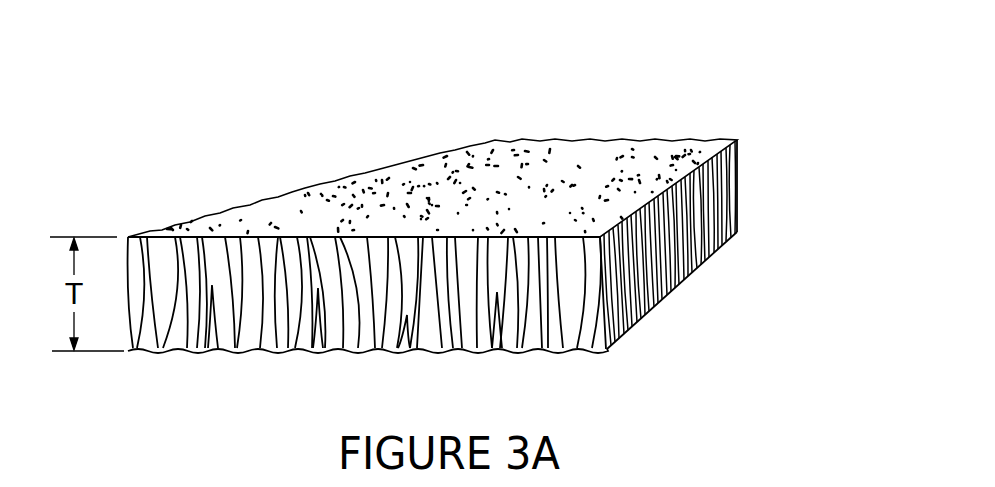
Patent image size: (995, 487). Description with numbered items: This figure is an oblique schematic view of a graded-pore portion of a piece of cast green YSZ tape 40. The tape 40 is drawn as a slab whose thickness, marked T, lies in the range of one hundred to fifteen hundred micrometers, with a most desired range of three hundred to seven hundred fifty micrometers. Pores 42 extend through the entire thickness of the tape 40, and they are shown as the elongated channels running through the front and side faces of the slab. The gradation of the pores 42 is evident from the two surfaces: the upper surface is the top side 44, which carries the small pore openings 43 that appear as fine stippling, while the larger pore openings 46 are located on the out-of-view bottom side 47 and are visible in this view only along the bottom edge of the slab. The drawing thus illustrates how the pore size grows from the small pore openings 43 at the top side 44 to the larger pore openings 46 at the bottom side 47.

The green YSZ tape 40 is at (440, 247).
The pores 42 is at (533, 280).
The small pore openings 43 is at (308, 235).
The top side 44 is at (448, 157).
The larger pore openings 46 is at (427, 348).
The bottom side 47 is at (188, 352).